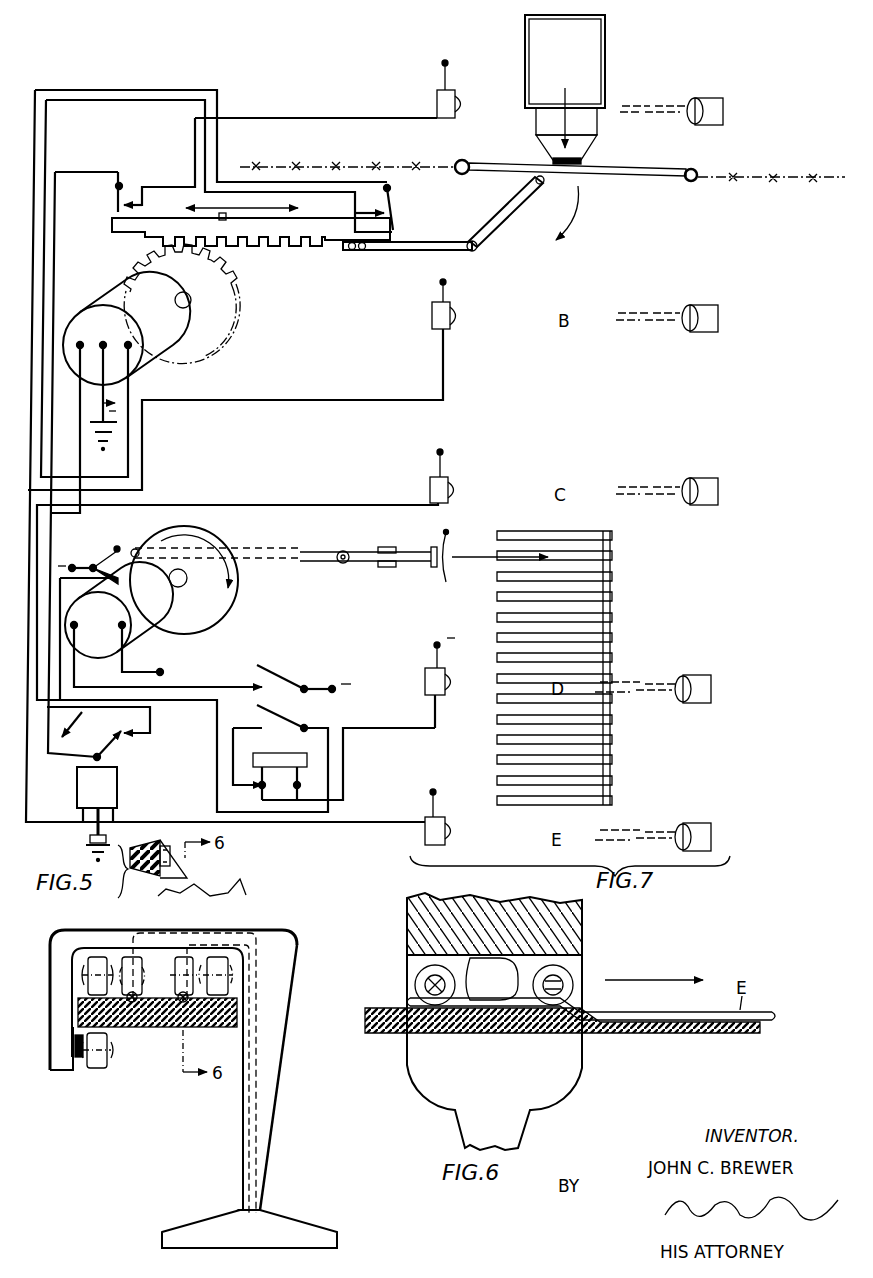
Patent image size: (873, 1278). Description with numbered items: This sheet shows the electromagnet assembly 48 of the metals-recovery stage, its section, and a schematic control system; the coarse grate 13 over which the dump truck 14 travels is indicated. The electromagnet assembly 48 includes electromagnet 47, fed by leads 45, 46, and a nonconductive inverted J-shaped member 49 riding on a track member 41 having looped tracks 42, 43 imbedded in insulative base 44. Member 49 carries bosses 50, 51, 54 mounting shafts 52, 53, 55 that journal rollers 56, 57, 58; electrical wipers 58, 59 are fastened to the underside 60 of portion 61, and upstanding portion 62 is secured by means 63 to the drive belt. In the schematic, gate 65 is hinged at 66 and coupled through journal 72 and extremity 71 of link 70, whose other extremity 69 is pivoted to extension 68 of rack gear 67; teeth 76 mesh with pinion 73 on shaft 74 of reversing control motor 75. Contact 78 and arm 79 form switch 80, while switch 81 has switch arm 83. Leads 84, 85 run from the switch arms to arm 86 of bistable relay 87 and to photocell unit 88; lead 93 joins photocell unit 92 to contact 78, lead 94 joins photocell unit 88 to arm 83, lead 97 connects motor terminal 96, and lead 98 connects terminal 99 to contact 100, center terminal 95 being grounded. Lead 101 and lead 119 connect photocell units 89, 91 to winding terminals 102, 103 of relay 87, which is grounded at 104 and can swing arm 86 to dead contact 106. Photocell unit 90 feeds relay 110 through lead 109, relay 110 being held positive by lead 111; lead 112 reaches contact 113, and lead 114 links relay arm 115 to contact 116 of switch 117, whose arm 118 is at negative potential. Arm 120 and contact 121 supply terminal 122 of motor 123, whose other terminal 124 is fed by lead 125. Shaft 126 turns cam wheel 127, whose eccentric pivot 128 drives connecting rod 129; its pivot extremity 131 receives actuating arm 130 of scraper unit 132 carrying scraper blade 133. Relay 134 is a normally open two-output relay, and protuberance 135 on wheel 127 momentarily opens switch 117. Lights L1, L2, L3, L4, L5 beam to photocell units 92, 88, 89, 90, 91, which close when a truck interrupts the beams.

In FIG. 7, the coarse grate 13 is at (612, 748).
In FIG. 7, the dump truck 14 is at (605, 80).
In FIG. 5, the track member 41 is at (122, 830).
In FIG. 5, the looped track 42 is at (132, 1004).
In FIG. 5, the looped track 43 is at (168, 1028).
In FIG. 6, the looped track 43 is at (625, 1020).
In FIG. 6, the insulative base 44 is at (385, 1034).
In FIG. 5, the lead 45 is at (225, 935).
In FIG. 5, the lead 46 is at (252, 945).
In FIG. 5, the electromagnet 47 is at (285, 1224).
In FIG. 5, the electromagnet assembly 48 is at (238, 1083).
In FIG. 6, the electromagnet assembly 48 is at (450, 1105).
In FIG. 5, the inverted J-shaped member 49 is at (280, 1008).
In FIG. 6, the inverted J-shaped member 49 is at (535, 1098).
In FIG. 5, the boss 50 is at (60, 972).
In FIG. 5, the boss 51 is at (74, 1043).
In FIG. 5, the shaft 52 is at (95, 960).
In FIG. 5, the shaft 53 is at (92, 1068).
In FIG. 5, the boss 54 is at (235, 988).
In FIG. 5, the shaft 55 is at (220, 980).
In FIG. 5, the roller 56 is at (108, 950).
In FIG. 5, the roller 57 is at (103, 1068).
In FIG. 5, the roller 58 is at (140, 968).
In FIG. 5, the electrical wiper 59 is at (175, 980).
In FIG. 6, the electrical wiper 59 is at (489, 979).
In FIG. 6, the underside 60 is at (553, 966).
In FIG. 5, the portion 61 is at (122, 940).
In FIG. 6, the portion 61 is at (582, 932).
In FIG. 7, the upstanding portion 62 is at (367, 187).
In FIG. 5, the upstanding portion 62 is at (226, 888).
In FIG. 5, the securing means 63 is at (166, 845).
In FIG. 7, the gate 65 is at (626, 170).
In FIG. 7, the hinge 66 is at (463, 175).
In FIG. 7, the rack gear 67 is at (322, 244).
In FIG. 7, the extension 68 is at (440, 244).
In FIG. 7, the extremity 69 is at (478, 248).
In FIG. 7, the link 70 is at (505, 215).
In FIG. 7, the opposite extremity 71 is at (530, 182).
In FIG. 7, the journal 72 is at (545, 182).
In FIG. 7, the pinion 73 is at (232, 312).
In FIG. 7, the shaft 74 is at (185, 308).
In FIG. 7, the control motor 75 is at (152, 372).
In FIG. 7, the teeth 76 is at (266, 246).
In FIG. 7, the contact 78 is at (121, 183).
In FIG. 7, the arm 79 is at (115, 200).
In FIG. 7, the switch 80 is at (130, 203).
In FIG. 7, the switch 81 is at (392, 190).
In FIG. 7, the switch arm 83 is at (394, 214).
In FIG. 7, the lead 84 is at (55, 262).
In FIG. 7, the lead 85 is at (352, 167).
In FIG. 7, the relay arm 86 is at (105, 750).
In FIG. 7, the bistable relay 87 is at (120, 775).
In FIG. 7, the photocell unit 88 is at (449, 328).
In FIG. 7, the photocell unit 89 is at (448, 499).
In FIG. 7, the photocell unit 90 is at (440, 696).
In FIG. 7, the photocell unit 91 is at (445, 838).
In FIG. 7, the photocell unit 92 is at (455, 112).
In FIG. 7, the lead 93 is at (325, 118).
In FIG. 7, the lead 94 is at (312, 400).
In FIG. 7, the center terminal 95 is at (103, 340).
In FIG. 7, the terminal 96 is at (131, 343).
In FIG. 7, the lead 97 is at (128, 380).
In FIG. 7, the lead 98 is at (75, 477).
In FIG. 7, the motor terminal 99 is at (78, 330).
In FIG. 7, the contact 100 is at (145, 730).
In FIG. 7, the lead 101 is at (290, 505).
In FIG. 7, the winding terminal 102 is at (80, 815).
In FIG. 7, the winding terminal 103 is at (115, 816).
In FIG. 7, the ground 104 is at (92, 826).
In FIG. 7, the dead contact 106 is at (80, 724).
In FIG. 7, the lead 109 is at (378, 724).
In FIG. 7, the relay 110 is at (279, 783).
In FIG. 7, the lead 111 is at (312, 780).
In FIG. 7, the lead 112 is at (236, 760).
In FIG. 7, the contact 113 is at (250, 722).
In FIG. 7, the lead 114 is at (320, 725).
In FIG. 7, the relay arm 115 is at (276, 716).
In FIG. 7, the contact 116 is at (102, 562).
In FIG. 7, the switch 117 is at (75, 563).
In FIG. 7, the arm 118 is at (117, 546).
In FIG. 7, the lead 119 is at (347, 822).
In FIG. 7, the arm 120 is at (272, 673).
In FIG. 7, the contact 121 is at (252, 678).
In FIG. 7, the terminal 122 is at (82, 614).
In FIG. 7, the motor 123 is at (135, 635).
In FIG. 7, the terminal 124 is at (120, 628).
In FIG. 7, the lead 125 is at (118, 672).
In FIG. 7, the shaft 126 is at (176, 588).
In FIG. 7, the cam wheel 127 is at (230, 610).
In FIG. 7, the eccentric pivot 128 is at (140, 548).
In FIG. 7, the connecting rod 129 is at (258, 556).
In FIG. 7, the actuating arm 130 is at (398, 552).
In FIG. 7, the pivot extremity 131 is at (343, 564).
In FIG. 7, the scraper unit 132 is at (432, 568).
In FIG. 7, the scraper blade 133 is at (450, 538).
In FIG. 7, the relay 134 is at (275, 753).
In FIG. 7, the protuberance 135 is at (140, 528).
In FIG. 7, the light L1 is at (723, 108).
In FIG. 7, the light L2 is at (718, 316).
In FIG. 7, the light L3 is at (718, 492).
In FIG. 7, the light L4 is at (711, 690).
In FIG. 7, the light L5 is at (711, 838).